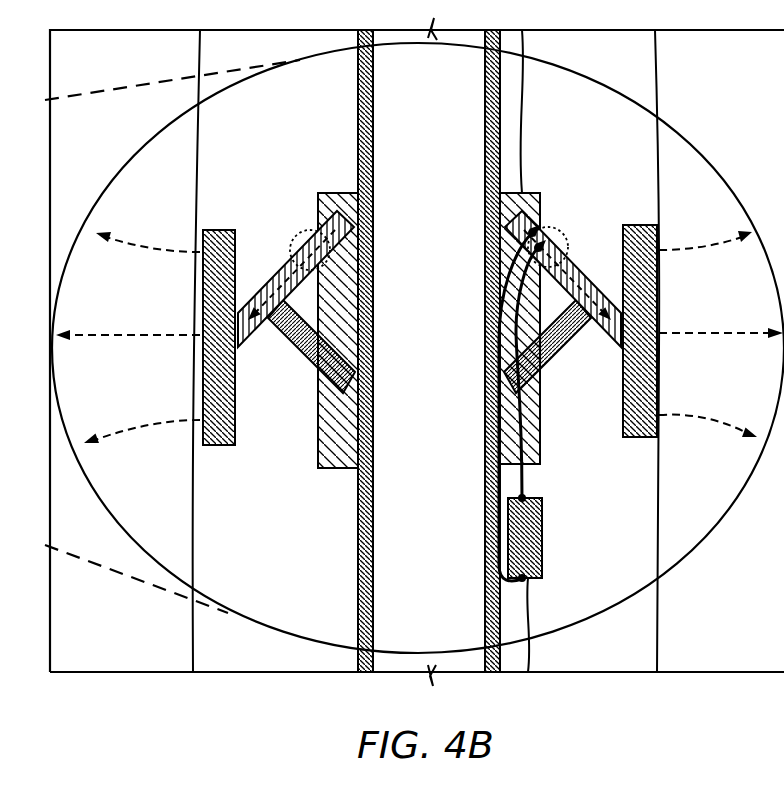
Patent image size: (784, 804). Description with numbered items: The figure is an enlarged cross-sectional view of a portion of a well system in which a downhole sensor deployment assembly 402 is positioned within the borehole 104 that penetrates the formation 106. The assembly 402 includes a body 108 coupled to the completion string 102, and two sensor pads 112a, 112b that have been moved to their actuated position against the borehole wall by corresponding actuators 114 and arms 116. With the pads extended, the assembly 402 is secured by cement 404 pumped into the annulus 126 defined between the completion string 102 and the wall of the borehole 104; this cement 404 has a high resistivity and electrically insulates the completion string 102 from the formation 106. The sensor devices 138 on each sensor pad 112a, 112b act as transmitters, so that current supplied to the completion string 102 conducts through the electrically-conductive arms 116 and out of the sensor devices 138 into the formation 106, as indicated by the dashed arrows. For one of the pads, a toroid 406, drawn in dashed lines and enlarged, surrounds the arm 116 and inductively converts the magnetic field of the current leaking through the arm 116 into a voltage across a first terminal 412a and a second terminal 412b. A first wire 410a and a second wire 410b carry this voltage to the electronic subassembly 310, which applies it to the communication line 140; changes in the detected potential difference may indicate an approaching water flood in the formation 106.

The completion string 102 is at (364, 94).
The borehole 104 is at (652, 47).
The formation 106 is at (770, 141).
The body 108 is at (487, 196).
The sensor pad 112a is at (195, 238).
The sensor pad 112b is at (665, 235).
The actuator 114 is at (297, 347).
The arm 116 is at (247, 290).
The annulus 126 is at (298, 129).
The sensor device 138 is at (203, 445).
The communication line 140 is at (524, 116).
The electronic subassembly 310 is at (540, 532).
The downhole sensor deployment assembly 402 is at (340, 485).
The cement 404 is at (650, 97).
The toroid 406 is at (566, 212).
The first wire 410a is at (497, 275).
The second wire 410b is at (500, 303).
The first terminal 412a is at (497, 250).
The second terminal 412b is at (495, 218).